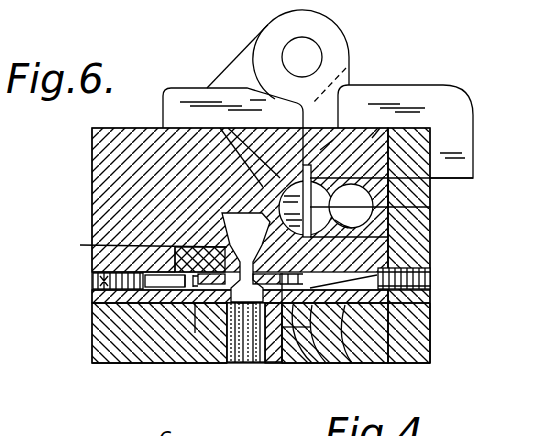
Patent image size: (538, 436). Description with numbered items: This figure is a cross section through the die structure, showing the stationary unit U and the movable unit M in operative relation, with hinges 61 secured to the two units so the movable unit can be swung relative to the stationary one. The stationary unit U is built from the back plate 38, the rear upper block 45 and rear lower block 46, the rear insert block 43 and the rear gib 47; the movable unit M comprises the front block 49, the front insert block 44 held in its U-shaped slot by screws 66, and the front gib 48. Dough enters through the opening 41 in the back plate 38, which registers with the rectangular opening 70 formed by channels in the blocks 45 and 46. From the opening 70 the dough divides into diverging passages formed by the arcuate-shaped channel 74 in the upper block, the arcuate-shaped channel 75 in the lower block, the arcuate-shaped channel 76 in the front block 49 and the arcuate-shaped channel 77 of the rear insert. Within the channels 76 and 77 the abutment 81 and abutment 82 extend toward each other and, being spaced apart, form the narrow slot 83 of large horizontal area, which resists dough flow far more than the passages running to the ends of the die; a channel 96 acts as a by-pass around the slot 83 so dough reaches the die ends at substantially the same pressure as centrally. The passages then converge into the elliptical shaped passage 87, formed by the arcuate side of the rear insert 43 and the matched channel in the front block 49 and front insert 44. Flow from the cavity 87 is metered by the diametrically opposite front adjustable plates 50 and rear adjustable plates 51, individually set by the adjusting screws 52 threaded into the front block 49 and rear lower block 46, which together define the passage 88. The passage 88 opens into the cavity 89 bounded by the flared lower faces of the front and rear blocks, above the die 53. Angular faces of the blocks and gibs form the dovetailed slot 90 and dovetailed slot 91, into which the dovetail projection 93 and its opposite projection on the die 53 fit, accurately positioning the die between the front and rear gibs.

The back plate 38 is at (430, 140).
The opening 41 is at (430, 190).
The rear insert block 43 is at (374, 363).
The front insert block 44 is at (141, 256).
The rear upper block 45 is at (360, 200).
The rear lower block 46 is at (360, 229).
The rear gib 47 is at (423, 363).
The front gib 48 is at (130, 363).
The front block 49 is at (92, 146).
The front adjustable plates 50 is at (213, 330).
The rear adjustable plates 51 is at (268, 363).
The adjusting screws 52 is at (92, 307).
The die 53 is at (258, 363).
The hinges 61 is at (351, 70).
The screws 66 is at (235, 228).
The rectangular opening 70 is at (380, 128).
The arcuate-shaped channel 74 is at (333, 140).
The arcuate-shaped channel 75 is at (393, 279).
The arcuate-shaped channel 76 is at (220, 128).
The arcuate-shaped channel 77 is at (228, 128).
The abutment 81 is at (312, 160).
The abutment 82 is at (428, 320).
The narrow slot 83 is at (400, 208).
The elliptical shaped passage 87 is at (240, 243).
The passage 88 is at (226, 360).
The cavity 89 is at (237, 287).
The dovetailed slot 90 is at (195, 307).
The dovetailed slot 91 is at (326, 363).
The dovetail projection 93 is at (312, 363).
The channel 96 is at (430, 159).
The movable unit M is at (127, 364).
The stationary unit U is at (436, 356).